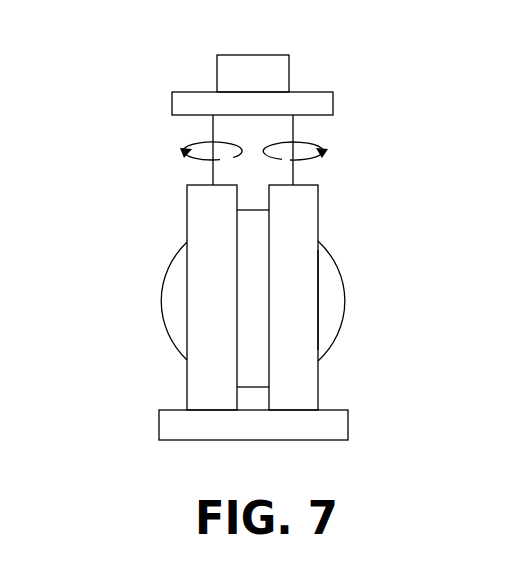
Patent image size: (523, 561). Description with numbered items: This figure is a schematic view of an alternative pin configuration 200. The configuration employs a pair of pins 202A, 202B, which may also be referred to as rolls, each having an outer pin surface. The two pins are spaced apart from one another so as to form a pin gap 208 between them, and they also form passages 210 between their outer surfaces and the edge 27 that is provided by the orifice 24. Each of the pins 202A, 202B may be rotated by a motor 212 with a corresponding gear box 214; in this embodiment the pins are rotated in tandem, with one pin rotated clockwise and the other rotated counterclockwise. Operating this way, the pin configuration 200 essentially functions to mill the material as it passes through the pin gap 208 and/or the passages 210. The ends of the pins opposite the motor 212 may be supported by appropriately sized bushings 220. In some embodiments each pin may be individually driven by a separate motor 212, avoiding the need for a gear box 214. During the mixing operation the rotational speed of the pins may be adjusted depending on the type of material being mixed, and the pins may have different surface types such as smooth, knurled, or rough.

The pin configuration 200 is at (355, 294).
The pin 202A is at (202, 251).
The pin 202B is at (297, 225).
The pin gap 208 is at (257, 320).
The passage 210 is at (300, 305).
The motor 212 is at (289, 73).
The gear box 214 is at (333, 103).
The bushing 220 is at (347, 409).
The orifice 24 is at (178, 322).
The edge 27 is at (414, 316).